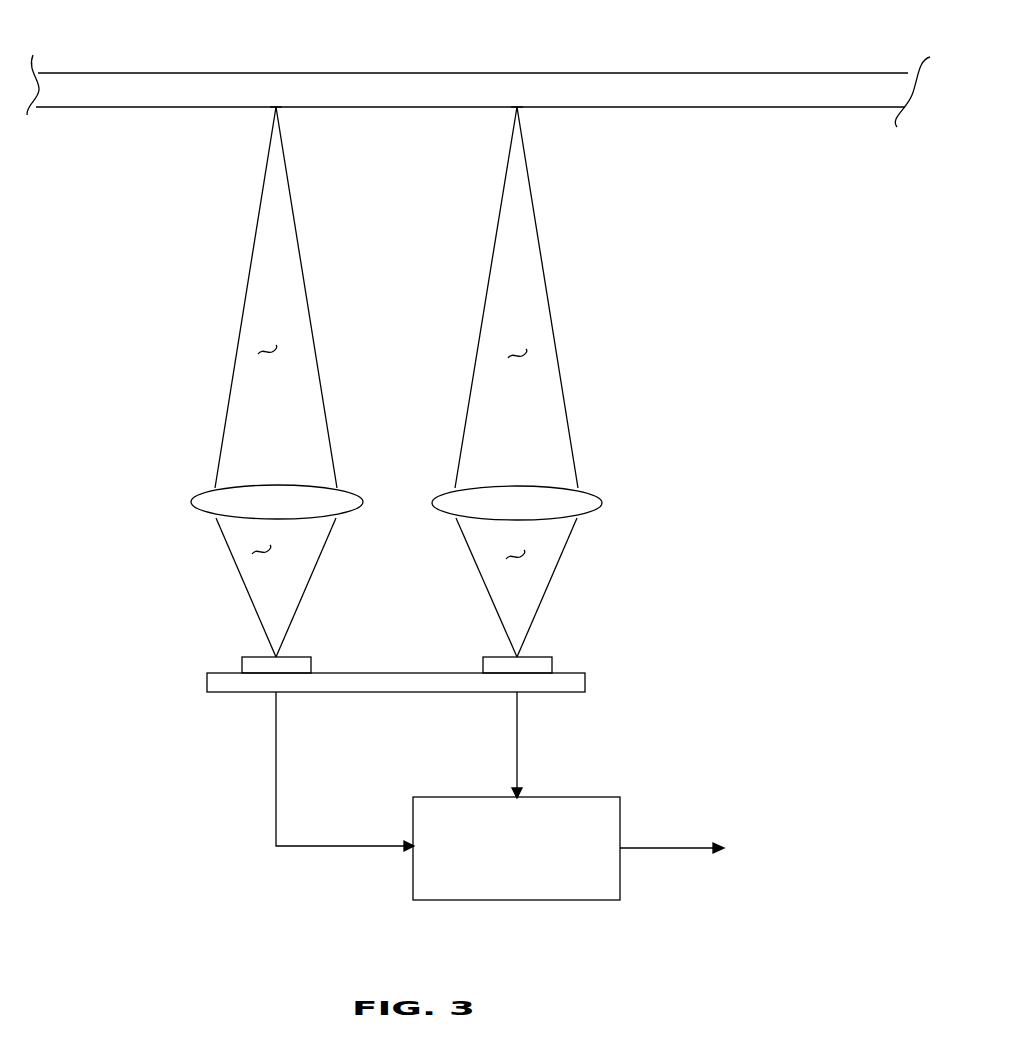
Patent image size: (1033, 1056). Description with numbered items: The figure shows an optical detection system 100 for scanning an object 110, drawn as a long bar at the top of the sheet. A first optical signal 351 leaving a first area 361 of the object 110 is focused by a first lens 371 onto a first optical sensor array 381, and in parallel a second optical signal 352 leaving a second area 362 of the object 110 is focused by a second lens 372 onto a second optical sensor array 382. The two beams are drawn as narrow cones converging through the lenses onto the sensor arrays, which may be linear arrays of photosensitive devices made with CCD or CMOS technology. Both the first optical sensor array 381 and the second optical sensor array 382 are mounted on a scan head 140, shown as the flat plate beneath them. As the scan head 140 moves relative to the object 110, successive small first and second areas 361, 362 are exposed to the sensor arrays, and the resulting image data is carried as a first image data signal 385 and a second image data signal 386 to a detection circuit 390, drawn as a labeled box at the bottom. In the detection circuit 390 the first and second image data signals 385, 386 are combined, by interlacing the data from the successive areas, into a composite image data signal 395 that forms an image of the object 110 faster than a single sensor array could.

The optical detection system 100 is at (760, 587).
The object 110 is at (655, 73).
The scan head 140 is at (578, 673).
The first optical signal 351 is at (268, 344).
The second optical signal 352 is at (518, 350).
The first area 361 is at (263, 130).
The second area 362 is at (502, 130).
The first lens 371 is at (353, 490).
The second lens 372 is at (593, 490).
The first optical sensor array 381 is at (303, 657).
The second optical sensor array 382 is at (543, 657).
The first image data signal 385 is at (276, 770).
The second image data signal 386 is at (517, 740).
The detection circuit 390 is at (595, 797).
The composite image data signal 395 is at (655, 848).